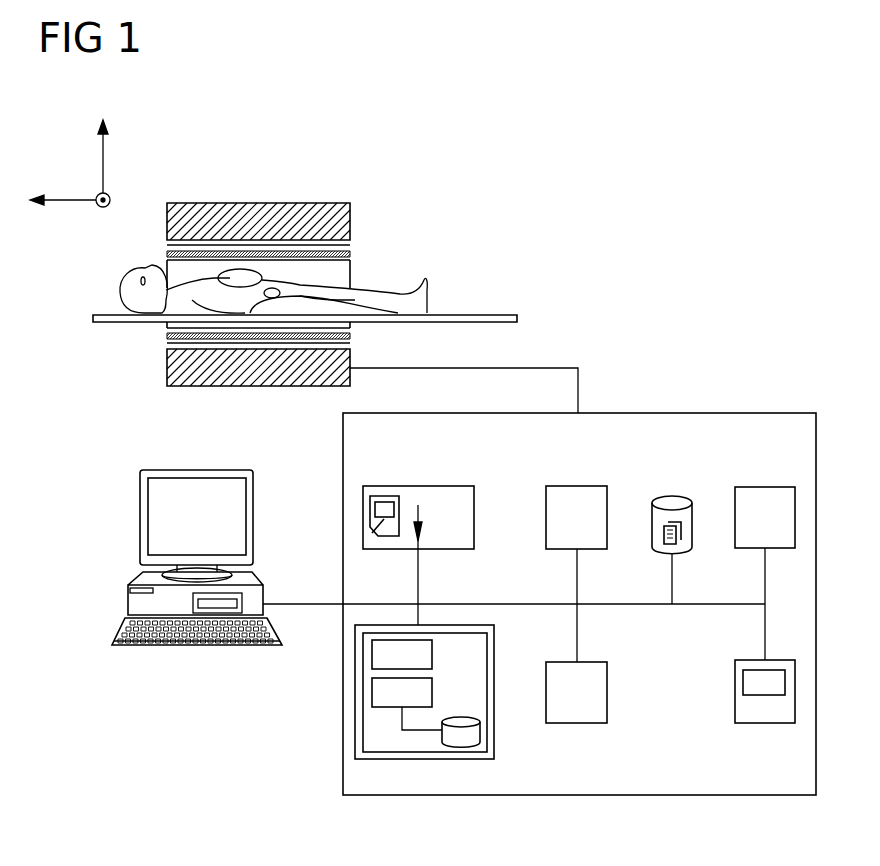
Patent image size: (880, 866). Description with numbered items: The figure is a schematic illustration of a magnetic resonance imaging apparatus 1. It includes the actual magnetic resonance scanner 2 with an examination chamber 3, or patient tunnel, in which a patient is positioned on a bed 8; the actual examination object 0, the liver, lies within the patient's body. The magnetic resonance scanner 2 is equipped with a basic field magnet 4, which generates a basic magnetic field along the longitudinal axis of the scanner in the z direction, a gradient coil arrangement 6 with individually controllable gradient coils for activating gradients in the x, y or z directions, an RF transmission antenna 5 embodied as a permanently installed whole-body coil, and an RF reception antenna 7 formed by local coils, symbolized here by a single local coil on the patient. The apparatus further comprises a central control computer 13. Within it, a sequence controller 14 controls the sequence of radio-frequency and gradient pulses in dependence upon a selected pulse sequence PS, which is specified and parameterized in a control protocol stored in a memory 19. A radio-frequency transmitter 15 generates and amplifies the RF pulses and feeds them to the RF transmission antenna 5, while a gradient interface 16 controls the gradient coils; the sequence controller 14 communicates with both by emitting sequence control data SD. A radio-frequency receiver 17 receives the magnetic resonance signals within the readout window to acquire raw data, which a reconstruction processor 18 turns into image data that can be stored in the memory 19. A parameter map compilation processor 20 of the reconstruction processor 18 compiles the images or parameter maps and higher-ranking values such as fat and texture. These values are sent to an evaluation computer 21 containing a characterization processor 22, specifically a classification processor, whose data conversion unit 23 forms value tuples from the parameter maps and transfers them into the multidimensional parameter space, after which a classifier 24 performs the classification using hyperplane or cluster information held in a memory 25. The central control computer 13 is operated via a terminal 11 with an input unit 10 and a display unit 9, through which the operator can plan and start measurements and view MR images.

The magnetic resonance imaging apparatus 1 is at (702, 140).
The magnetic resonance scanner 2 is at (309, 189).
The examination chamber 3 is at (328, 277).
The basic field magnet 4 is at (352, 207).
The RF transmission antenna 5 is at (167, 251).
The gradient coil arrangement 6 is at (352, 246).
The RF reception antenna 7 is at (240, 276).
The examination object 0 is at (272, 287).
The bed 8 is at (518, 318).
The display unit 9 is at (195, 469).
The input unit 10 is at (196, 648).
The terminal 11 is at (118, 507).
The central control computer 13 is at (685, 413).
The sequence controller 14 is at (418, 486).
The radio-frequency transmitter 15 is at (577, 486).
The gradient interface 16 is at (607, 683).
The radio-frequency receiver 17 is at (765, 487).
The reconstruction processor 18 is at (735, 708).
The memory 19 is at (672, 494).
The parameter map compilation processor 20 is at (743, 681).
The evaluation computer 21 is at (470, 760).
The characterization processor 22 is at (363, 735).
The data conversion unit 23 is at (372, 655).
The classifier 24 is at (372, 697).
The memory 25 is at (474, 735).
The pulse sequence PS is at (385, 500).
The sequence control data SD is at (420, 514).